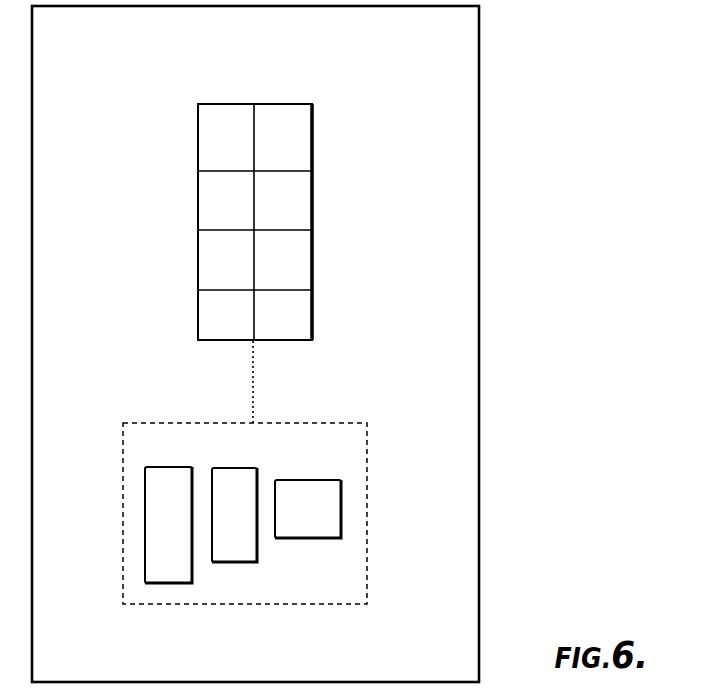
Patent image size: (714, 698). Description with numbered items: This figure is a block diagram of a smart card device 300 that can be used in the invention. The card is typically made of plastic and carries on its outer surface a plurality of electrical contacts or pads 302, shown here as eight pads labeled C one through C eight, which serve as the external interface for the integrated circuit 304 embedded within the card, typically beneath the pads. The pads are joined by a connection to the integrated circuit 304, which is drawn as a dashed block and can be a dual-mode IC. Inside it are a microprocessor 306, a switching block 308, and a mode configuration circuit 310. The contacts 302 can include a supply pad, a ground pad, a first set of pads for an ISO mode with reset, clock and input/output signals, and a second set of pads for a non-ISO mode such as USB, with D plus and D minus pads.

The smart card device 300 is at (481, 134).
The electrical contacts or pads 302 is at (378, 155).
The integrated circuit 304 is at (415, 450).
The microprocessor 306 is at (410, 532).
The switching block 308 is at (258, 620).
The mode configuration circuit 310 is at (145, 510).